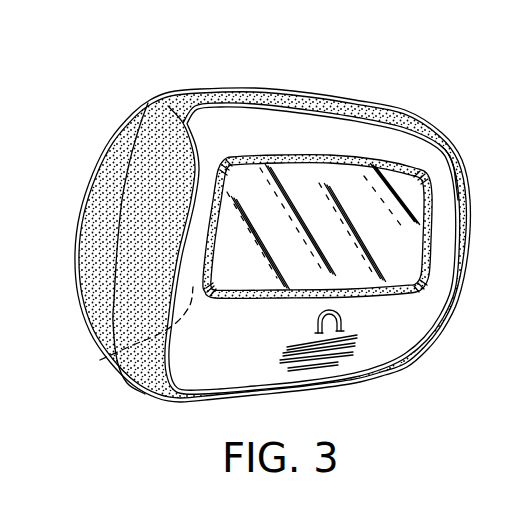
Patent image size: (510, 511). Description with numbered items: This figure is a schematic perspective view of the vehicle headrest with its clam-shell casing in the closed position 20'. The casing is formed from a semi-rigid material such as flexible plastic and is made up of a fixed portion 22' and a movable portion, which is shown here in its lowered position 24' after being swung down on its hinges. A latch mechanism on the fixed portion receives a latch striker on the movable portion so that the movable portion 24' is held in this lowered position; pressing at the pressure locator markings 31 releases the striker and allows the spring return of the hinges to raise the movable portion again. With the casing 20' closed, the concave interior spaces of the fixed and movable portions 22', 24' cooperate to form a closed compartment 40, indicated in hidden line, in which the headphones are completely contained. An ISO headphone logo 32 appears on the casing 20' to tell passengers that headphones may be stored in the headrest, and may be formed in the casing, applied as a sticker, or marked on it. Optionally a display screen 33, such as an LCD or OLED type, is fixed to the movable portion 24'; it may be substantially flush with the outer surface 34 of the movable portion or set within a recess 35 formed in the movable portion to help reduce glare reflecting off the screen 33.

The casing in closed position 20' is at (264, 245).
The fixed portion of the casing 22' is at (138, 210).
The movable portion of the casing in lowered position 24' is at (312, 219).
The pressure locator markings 31 is at (345, 358).
The headphone logo 32 is at (344, 322).
The display screen 33 is at (367, 207).
The outer surface 34 is at (333, 137).
The recess 35 is at (457, 143).
The closed compartment 40 is at (103, 358).